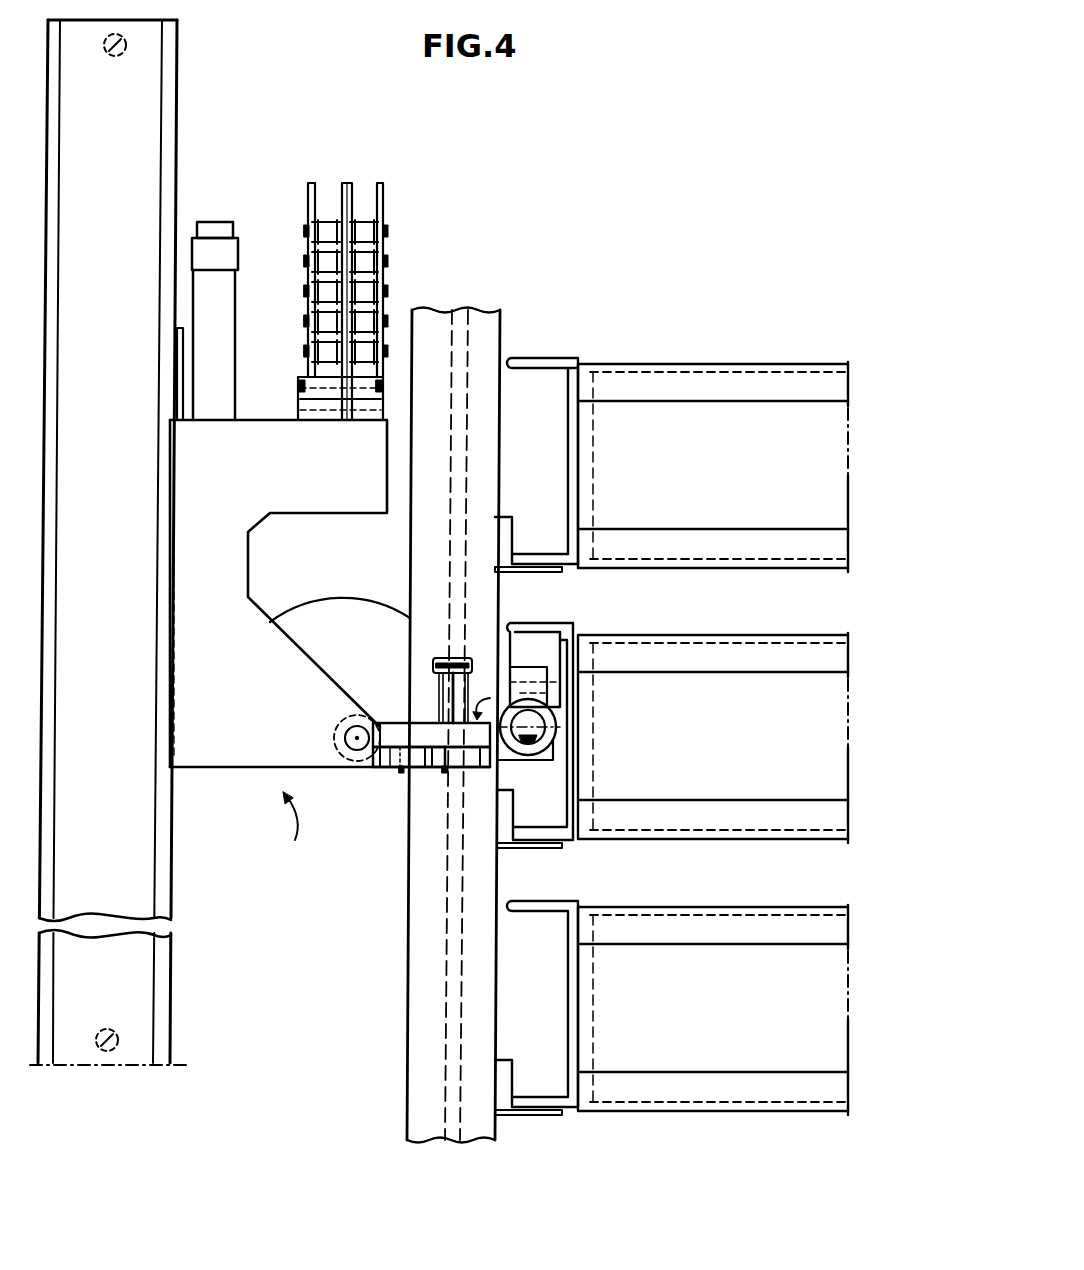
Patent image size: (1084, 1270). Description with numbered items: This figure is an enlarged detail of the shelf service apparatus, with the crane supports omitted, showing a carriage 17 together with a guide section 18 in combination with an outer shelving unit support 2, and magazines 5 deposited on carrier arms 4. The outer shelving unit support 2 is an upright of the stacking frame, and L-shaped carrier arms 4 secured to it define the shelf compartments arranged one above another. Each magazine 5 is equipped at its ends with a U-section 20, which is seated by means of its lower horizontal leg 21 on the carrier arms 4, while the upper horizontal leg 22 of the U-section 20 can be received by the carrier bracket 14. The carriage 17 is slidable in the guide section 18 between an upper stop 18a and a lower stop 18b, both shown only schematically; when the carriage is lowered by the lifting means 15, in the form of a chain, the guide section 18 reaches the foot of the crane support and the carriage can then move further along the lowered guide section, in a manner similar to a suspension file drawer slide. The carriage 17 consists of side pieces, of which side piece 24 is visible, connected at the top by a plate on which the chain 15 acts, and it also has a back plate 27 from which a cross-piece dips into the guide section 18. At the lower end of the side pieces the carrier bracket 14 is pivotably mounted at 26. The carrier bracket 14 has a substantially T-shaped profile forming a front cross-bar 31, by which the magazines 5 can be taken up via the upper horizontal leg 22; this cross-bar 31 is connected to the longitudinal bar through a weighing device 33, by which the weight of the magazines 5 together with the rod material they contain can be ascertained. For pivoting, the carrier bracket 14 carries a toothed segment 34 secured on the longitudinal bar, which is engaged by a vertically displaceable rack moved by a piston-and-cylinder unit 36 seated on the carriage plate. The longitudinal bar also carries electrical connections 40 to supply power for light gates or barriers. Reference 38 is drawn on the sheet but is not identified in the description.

The outer shelving unit support 2 is at (480, 328).
The carrier arm 4 is at (555, 568).
The magazine 5 is at (802, 410).
The carrier bracket 14 is at (492, 725).
The lifting means 15 is at (362, 210).
The carriage 17 is at (297, 830).
The guide section 18 is at (150, 84).
The upper stop 18a is at (124, 40).
The lower stop 18b is at (118, 1049).
The U-section 20 is at (577, 435).
The lower horizontal leg 21 is at (543, 552).
The upper horizontal leg 22 is at (542, 358).
The side piece 24 is at (235, 748).
The pivot mounting 26 is at (357, 750).
The back plate 27 is at (178, 368).
The front cross-bar 31 is at (550, 692).
The weighing device 33 is at (553, 732).
The toothed segment 34 is at (362, 620).
The piston-and-cylinder unit 36 is at (214, 222).
The shelf bracket 38 is at (525, 623).
The electrical connections 40 is at (455, 658).